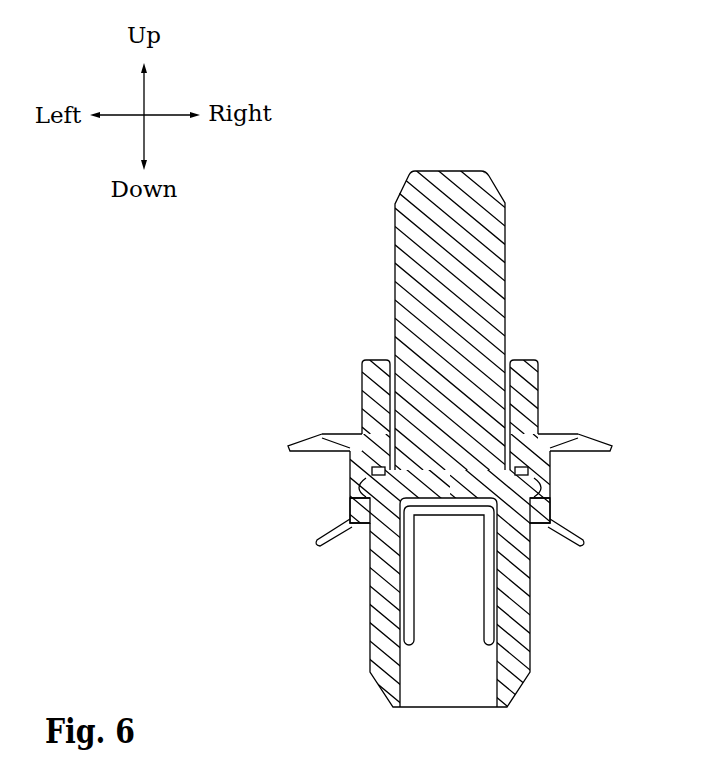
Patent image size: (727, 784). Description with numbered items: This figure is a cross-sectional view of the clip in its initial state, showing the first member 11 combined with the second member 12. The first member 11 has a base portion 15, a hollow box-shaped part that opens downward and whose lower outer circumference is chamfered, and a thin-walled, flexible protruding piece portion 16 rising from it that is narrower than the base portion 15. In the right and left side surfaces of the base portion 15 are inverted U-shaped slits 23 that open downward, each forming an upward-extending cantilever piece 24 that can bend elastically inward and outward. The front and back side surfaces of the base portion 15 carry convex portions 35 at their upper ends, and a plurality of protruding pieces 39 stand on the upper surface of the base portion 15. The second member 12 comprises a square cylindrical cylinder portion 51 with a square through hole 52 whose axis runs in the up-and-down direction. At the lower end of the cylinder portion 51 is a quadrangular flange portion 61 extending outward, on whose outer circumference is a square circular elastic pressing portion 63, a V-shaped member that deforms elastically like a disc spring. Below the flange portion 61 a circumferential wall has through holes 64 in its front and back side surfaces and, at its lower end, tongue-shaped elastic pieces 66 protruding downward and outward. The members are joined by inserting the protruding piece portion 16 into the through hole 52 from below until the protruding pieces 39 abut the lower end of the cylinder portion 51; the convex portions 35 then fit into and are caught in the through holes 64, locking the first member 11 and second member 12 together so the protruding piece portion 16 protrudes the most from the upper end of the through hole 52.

The first member 11 is at (325, 220).
The second member 12 is at (358, 355).
The base portion 15 is at (540, 667).
The protruding piece portion 16 is at (510, 254).
The slit 23 is at (500, 624).
The cantilever piece 24 is at (475, 595).
The convex portion 35 is at (358, 490).
The protruding piece 39 is at (345, 452).
The cylinder portion 51 is at (368, 391).
The through hole 52 is at (394, 362).
The flange portion 61 is at (543, 450).
The elastic pressing portion 63 is at (606, 442).
The through hole 64 is at (345, 497).
The elastic piece 66 is at (318, 537).